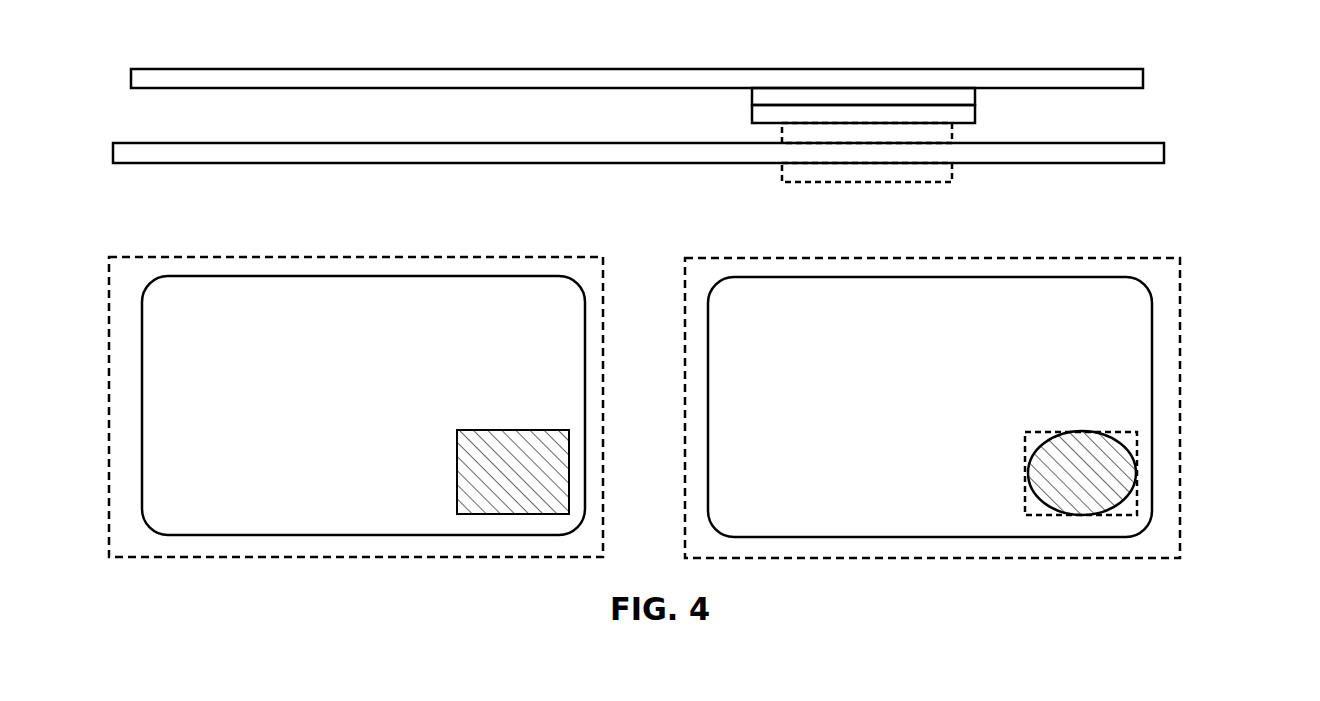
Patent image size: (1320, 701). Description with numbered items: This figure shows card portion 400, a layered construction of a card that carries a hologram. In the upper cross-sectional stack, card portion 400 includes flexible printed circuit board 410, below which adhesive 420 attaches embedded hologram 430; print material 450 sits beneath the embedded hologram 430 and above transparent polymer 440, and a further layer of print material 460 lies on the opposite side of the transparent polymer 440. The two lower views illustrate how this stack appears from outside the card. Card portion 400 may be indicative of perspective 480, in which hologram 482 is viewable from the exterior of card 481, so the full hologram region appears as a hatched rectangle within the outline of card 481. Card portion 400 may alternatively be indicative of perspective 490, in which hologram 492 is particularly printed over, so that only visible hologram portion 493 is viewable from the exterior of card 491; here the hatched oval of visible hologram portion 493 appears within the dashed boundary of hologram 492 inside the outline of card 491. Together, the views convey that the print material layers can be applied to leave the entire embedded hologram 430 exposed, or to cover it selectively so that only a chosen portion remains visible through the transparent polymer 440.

The card portion 400 is at (1272, 107).
The flexible printed circuit board 410 is at (155, 68).
The adhesive 420 is at (752, 93).
The embedded hologram 430 is at (976, 111).
The transparent polymer 440 is at (135, 163).
The print material 450 is at (953, 131).
The print material 460 is at (783, 183).
The perspective 480 is at (108, 259).
The card 481 is at (143, 515).
The hologram 482 is at (457, 455).
The perspective 490 is at (685, 304).
The card 491 is at (708, 465).
The hologram 492 is at (1025, 440).
The visible hologram portion 493 is at (1032, 505).